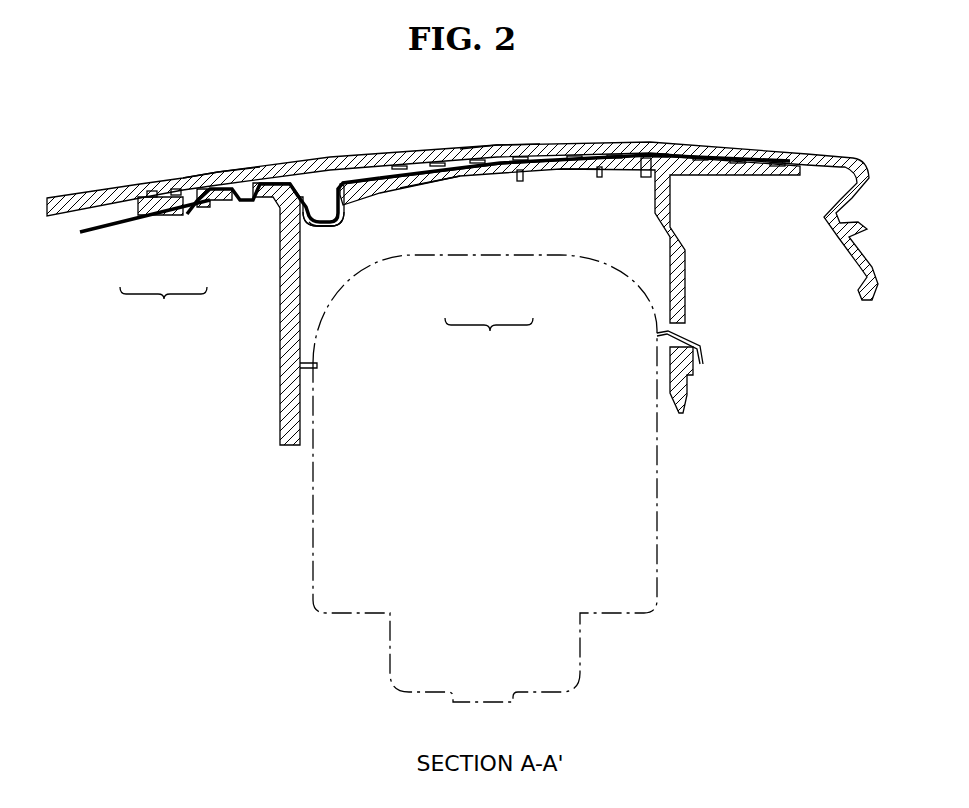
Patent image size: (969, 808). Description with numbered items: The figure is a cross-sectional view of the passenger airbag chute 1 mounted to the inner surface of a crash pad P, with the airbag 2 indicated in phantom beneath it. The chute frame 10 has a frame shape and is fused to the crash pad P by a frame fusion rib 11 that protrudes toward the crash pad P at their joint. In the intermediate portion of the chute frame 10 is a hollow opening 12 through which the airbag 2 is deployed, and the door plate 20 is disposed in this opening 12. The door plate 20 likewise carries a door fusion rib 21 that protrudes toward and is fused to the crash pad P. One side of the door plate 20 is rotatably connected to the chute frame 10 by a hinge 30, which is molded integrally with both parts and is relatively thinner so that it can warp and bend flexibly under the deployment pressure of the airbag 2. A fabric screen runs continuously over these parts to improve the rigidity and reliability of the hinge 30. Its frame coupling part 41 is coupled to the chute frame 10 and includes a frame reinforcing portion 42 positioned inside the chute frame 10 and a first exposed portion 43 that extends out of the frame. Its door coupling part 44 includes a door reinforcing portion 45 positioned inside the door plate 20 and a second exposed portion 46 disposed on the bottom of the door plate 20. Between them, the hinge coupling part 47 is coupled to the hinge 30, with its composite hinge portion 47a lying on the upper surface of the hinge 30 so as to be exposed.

The crash pad P is at (810, 153).
The passenger airbag chute 1 is at (705, 298).
The airbag 2 is at (678, 494).
The chute frame 10 is at (217, 165).
The frame fusion rib 11 is at (173, 182).
The opening 12 is at (562, 173).
The door plate 20 is at (496, 141).
The door fusion rib 21 is at (433, 160).
The hinge 30 is at (333, 242).
The frame coupling part 41 is at (163, 310).
The frame reinforcing portion 42 is at (222, 203).
The first exposed portion 43 is at (110, 227).
The door coupling part 44 is at (489, 340).
The door reinforcing portion 45 is at (427, 175).
The second exposed portion 46 is at (577, 160).
The hinge coupling part 47 is at (327, 205).
The composite hinge portion 47a is at (323, 219).